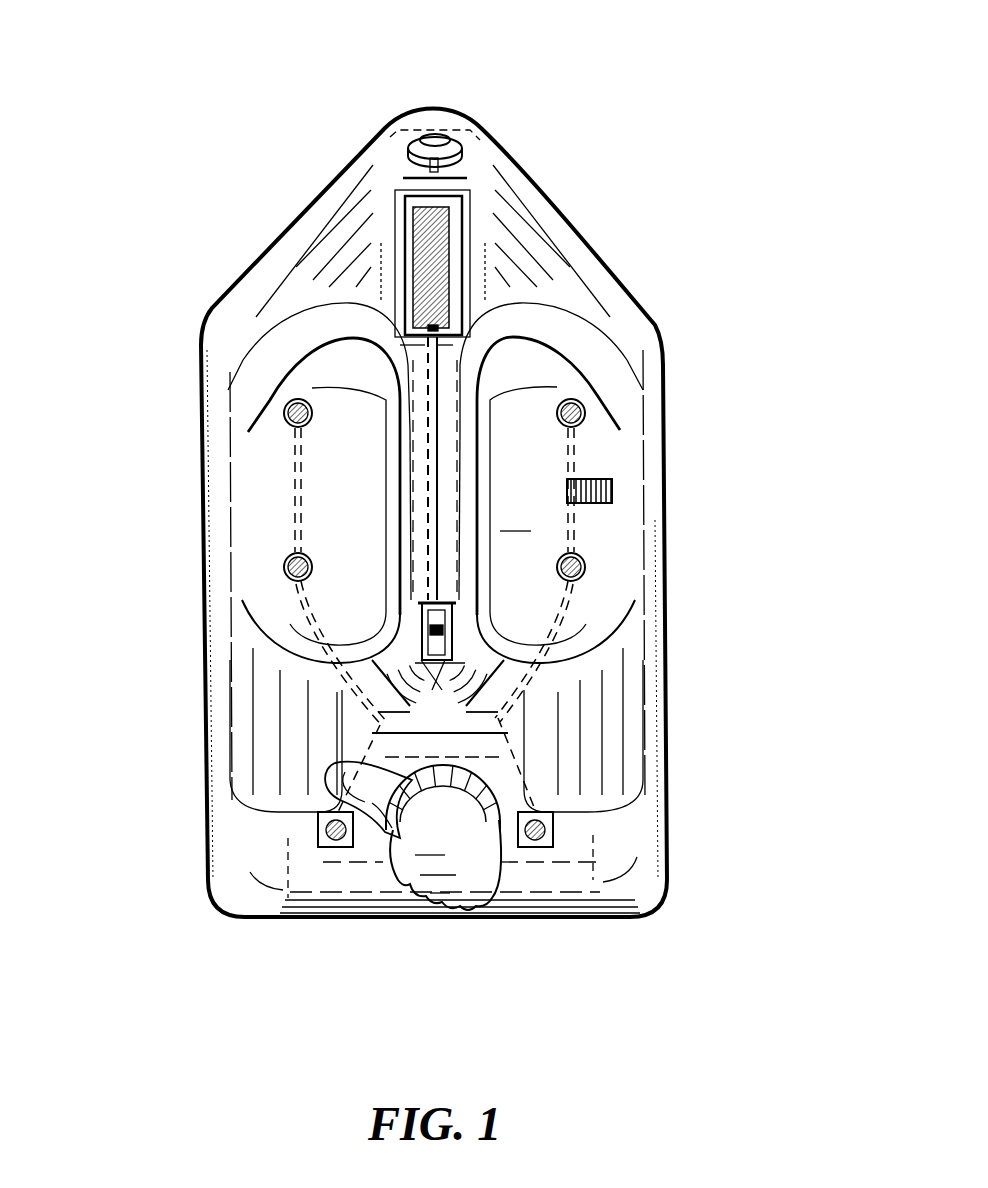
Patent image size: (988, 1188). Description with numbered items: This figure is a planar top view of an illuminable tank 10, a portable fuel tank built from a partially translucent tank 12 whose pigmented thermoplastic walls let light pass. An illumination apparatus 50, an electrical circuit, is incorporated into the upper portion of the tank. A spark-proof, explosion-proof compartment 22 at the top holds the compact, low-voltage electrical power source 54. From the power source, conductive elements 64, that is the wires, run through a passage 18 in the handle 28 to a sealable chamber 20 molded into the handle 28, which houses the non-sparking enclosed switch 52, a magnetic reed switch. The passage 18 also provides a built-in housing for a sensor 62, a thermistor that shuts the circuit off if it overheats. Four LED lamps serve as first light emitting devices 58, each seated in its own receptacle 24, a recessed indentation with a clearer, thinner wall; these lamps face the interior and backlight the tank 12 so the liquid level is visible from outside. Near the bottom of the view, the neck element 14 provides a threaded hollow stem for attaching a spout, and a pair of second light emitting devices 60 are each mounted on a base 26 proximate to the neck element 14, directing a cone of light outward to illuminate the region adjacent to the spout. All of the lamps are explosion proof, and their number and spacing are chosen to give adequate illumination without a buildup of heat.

The illuminable tank 10 is at (140, 155).
The partially translucent tank 12 is at (436, 539).
The neck element 14 is at (447, 777).
The passage 18 is at (428, 472).
The sealable chamber 20 is at (530, 663).
The compartment 22 is at (477, 213).
The receptacle 24 is at (283, 420).
The mounting base 26 is at (335, 857).
The handle 28 is at (397, 462).
The illumination apparatus 50 is at (175, 656).
The switch 52 is at (425, 628).
The electrical power source 54 is at (437, 263).
The first light emitting device 58 is at (288, 405).
The second light emitting device 60 is at (317, 830).
The sensor 62 is at (613, 482).
The conductive elements 64 is at (467, 333).